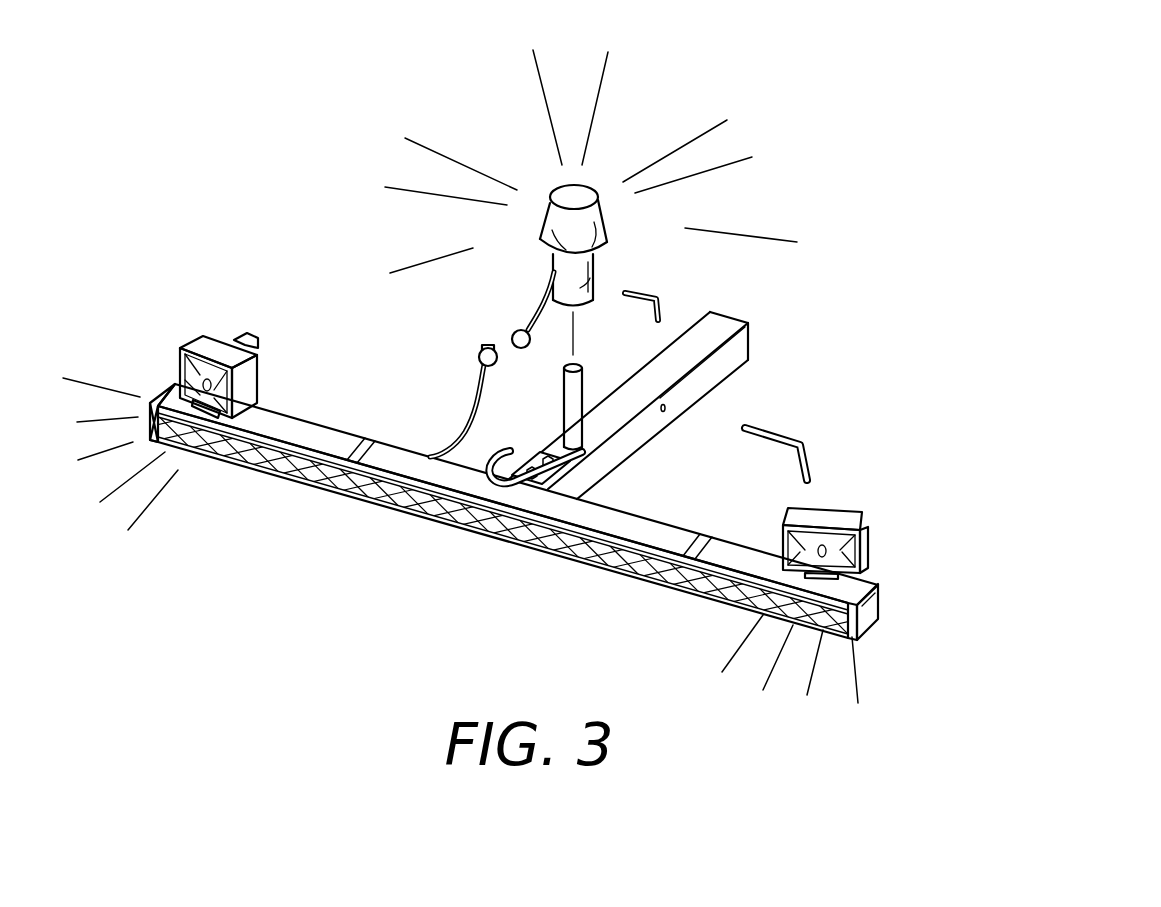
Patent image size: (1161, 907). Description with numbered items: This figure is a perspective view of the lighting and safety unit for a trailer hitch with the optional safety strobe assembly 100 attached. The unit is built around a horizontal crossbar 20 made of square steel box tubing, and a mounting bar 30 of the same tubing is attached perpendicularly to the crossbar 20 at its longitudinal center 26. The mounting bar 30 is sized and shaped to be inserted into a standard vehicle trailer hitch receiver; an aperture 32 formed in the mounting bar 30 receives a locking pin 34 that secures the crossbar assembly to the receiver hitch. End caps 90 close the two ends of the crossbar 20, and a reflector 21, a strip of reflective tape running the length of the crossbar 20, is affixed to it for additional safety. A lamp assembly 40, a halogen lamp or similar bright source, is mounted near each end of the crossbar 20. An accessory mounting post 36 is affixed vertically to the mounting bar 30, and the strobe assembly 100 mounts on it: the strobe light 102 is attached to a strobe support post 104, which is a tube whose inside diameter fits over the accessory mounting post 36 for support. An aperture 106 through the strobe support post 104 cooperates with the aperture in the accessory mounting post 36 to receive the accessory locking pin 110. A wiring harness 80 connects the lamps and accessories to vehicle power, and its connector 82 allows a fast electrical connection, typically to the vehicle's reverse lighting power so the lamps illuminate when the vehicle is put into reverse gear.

The crossbar 20 is at (322, 438).
The reflector 21 is at (312, 472).
The longitudinal center 26 is at (502, 540).
The mounting bar 30 is at (607, 477).
The aperture 32 is at (670, 412).
The locking pin 34 is at (810, 443).
The accessory mounting post 36 is at (562, 420).
The lamp assembly 40 is at (217, 338).
The wiring harness 80 is at (533, 310).
The connector 82 is at (478, 357).
The end cap 90 is at (160, 393).
The safety strobe assembly 100 is at (624, 133).
The strobe light 102 is at (570, 192).
The strobe support post 104 is at (550, 258).
The aperture 106 is at (590, 280).
The accessory locking pin 110 is at (648, 294).